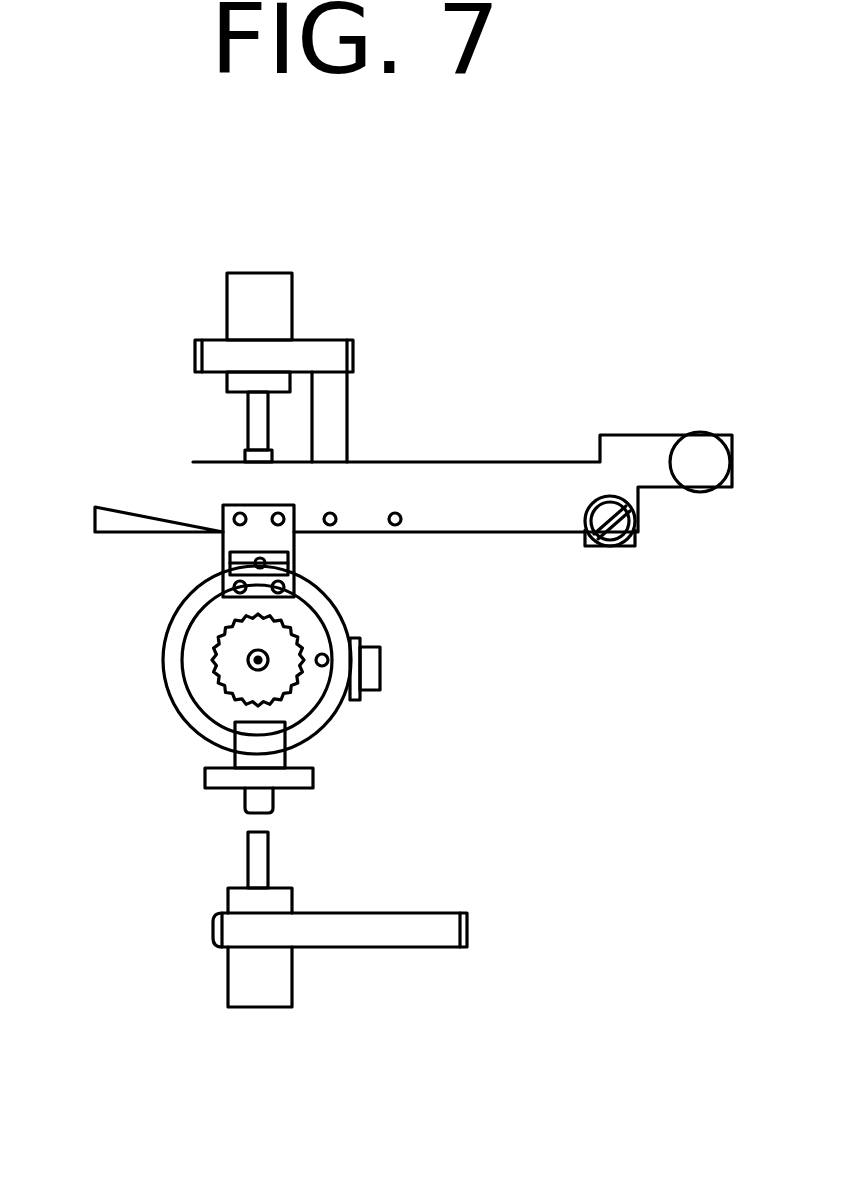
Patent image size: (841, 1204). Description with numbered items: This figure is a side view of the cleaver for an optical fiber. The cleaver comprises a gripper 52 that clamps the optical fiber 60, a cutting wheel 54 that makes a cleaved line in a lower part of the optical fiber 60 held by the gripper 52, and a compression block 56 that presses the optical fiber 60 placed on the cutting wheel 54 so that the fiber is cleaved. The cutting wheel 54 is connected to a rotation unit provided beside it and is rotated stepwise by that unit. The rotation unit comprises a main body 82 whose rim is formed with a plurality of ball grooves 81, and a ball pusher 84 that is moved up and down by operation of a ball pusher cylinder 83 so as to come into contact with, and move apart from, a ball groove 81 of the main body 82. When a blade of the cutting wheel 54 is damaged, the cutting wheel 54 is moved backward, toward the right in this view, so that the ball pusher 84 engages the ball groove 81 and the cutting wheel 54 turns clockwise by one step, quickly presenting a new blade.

The gripper 52 is at (233, 538).
The cutting wheel 54 is at (197, 737).
The compression block 56 is at (258, 417).
The optical fiber 60 is at (261, 560).
The ball grooves 81 is at (183, 685).
The main body 82 is at (242, 630).
The ball pusher cylinder 83 is at (272, 982).
The ball pusher 84 is at (262, 718).